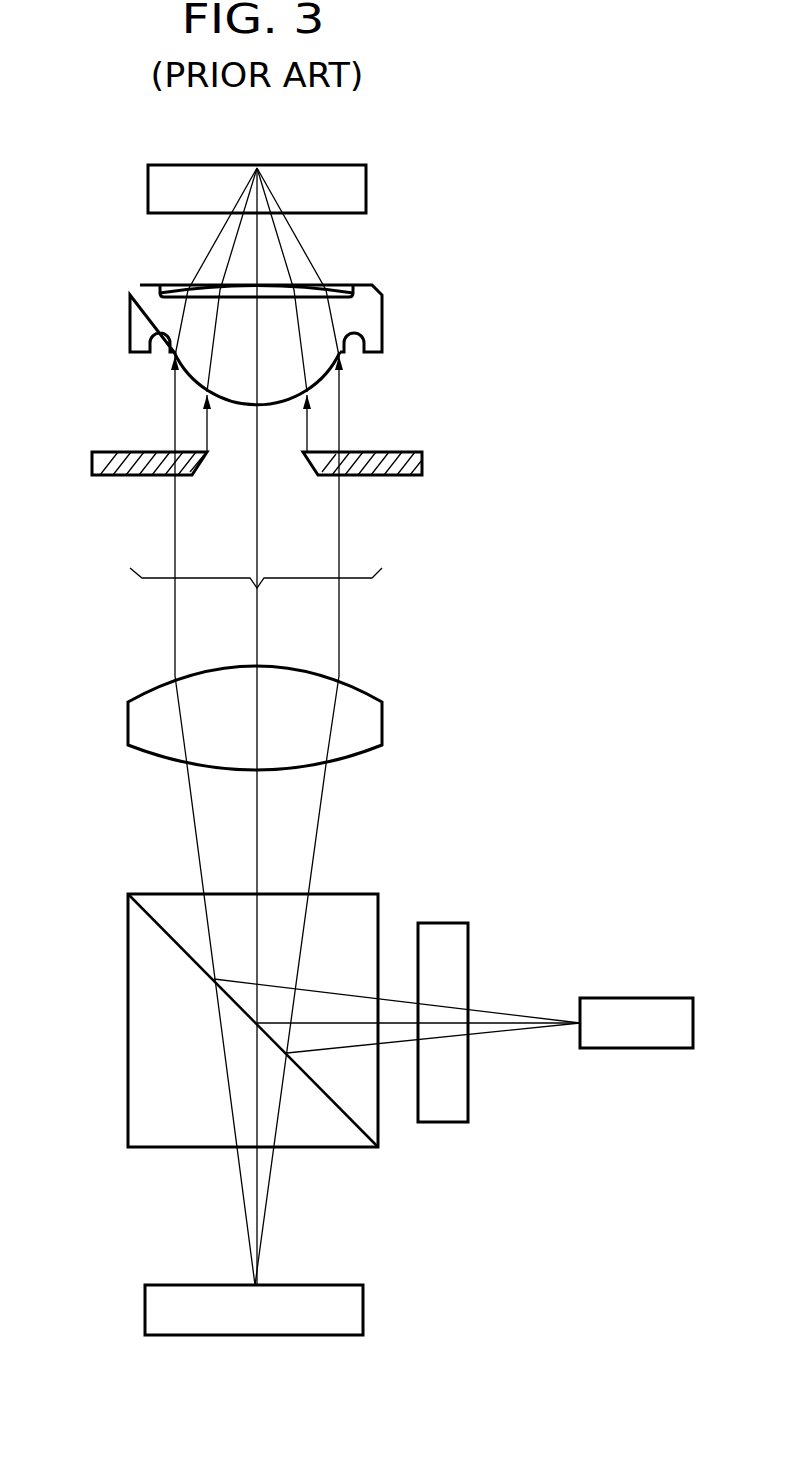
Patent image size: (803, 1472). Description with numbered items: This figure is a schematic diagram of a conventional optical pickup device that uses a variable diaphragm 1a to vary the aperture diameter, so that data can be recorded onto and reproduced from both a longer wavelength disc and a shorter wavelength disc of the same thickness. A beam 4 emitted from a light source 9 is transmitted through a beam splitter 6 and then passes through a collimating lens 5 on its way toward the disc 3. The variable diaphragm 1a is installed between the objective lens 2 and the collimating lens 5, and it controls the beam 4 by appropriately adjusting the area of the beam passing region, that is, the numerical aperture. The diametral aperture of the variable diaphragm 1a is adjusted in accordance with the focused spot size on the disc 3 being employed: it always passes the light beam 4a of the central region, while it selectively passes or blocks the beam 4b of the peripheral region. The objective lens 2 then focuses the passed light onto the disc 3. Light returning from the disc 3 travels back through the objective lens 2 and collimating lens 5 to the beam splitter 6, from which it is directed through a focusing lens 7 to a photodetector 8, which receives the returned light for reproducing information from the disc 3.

The variable diaphragm 1a is at (407, 452).
The objective lens 2 is at (130, 311).
The disc 3 is at (148, 165).
The beam 4 is at (256, 595).
The light beam of the central region 4a is at (257, 547).
The beam of the peripheral region 4b is at (175, 547).
The collimating lens 5 is at (382, 725).
The beam splitter 6 is at (128, 1035).
The focusing lens 7 is at (450, 1122).
The photodetector 8 is at (637, 998).
The light source 9 is at (363, 1315).